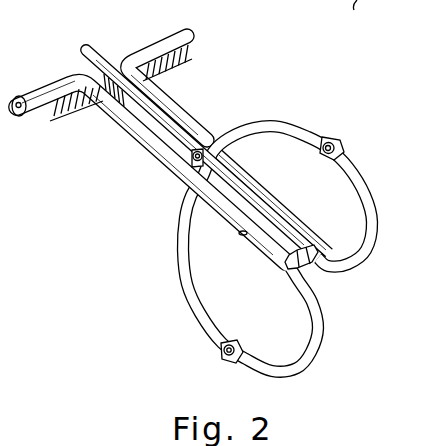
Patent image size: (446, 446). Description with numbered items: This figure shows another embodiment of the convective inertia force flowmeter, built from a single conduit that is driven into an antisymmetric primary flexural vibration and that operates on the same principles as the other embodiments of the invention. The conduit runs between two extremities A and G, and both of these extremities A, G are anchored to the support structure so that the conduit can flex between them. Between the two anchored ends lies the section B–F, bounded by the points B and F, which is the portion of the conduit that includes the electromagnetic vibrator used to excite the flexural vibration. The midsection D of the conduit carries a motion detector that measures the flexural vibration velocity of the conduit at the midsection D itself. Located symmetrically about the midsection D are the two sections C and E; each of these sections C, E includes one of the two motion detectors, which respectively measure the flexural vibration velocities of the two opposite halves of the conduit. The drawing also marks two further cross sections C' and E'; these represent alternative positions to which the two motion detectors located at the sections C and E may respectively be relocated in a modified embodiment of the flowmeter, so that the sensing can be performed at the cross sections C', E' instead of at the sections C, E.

The conduit extremity A is at (110, 110).
The end of vibrator section B is at (283, 268).
The motion detector section C is at (200, 366).
The alternative cross section C' is at (172, 266).
The midsection of the conduit D is at (112, 84).
The motion detector section E is at (369, 128).
The alternative cross section E' is at (319, 202).
The end of vibrator section F is at (386, 222).
The conduit extremity G is at (150, 86).